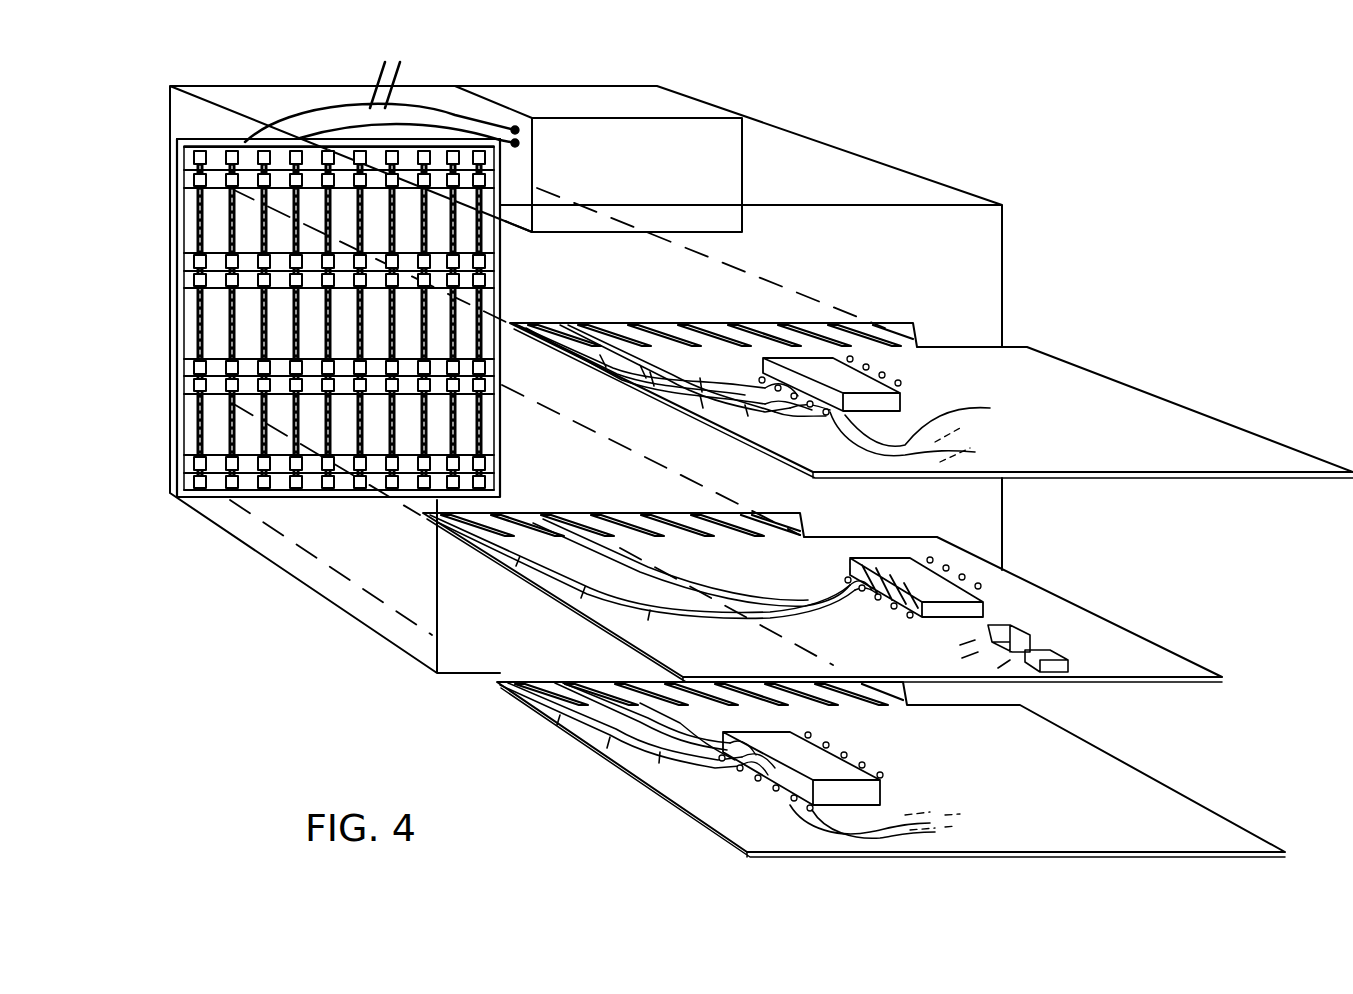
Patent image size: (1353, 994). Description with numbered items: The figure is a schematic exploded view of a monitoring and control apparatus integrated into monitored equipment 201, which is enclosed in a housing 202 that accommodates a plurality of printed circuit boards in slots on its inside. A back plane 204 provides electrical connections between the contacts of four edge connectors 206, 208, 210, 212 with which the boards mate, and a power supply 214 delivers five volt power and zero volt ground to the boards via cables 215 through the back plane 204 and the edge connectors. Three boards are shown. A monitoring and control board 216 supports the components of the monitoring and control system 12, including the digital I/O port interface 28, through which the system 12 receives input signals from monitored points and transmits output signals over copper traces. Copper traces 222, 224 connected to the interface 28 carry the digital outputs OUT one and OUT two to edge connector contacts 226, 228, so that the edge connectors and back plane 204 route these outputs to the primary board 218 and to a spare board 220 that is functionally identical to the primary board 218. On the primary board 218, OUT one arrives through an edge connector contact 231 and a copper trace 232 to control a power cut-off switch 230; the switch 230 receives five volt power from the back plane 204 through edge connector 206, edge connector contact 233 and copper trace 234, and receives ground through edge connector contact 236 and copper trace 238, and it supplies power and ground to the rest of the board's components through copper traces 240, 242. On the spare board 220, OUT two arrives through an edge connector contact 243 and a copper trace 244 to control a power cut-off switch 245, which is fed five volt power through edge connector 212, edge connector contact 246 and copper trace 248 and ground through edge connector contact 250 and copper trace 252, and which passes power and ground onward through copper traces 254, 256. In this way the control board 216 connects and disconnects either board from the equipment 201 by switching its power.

The equipment 201 is at (292, 268).
The cables 215 is at (382, 93).
The housing 202 is at (440, 97).
The back plane 204 is at (180, 140).
The edge connector 206 is at (192, 162).
The edge connector 208 is at (192, 268).
The edge connector 210 is at (192, 372).
The edge connector 212 is at (192, 466).
The power supply 214 is at (683, 112).
The edge connector contact 233 is at (547, 327).
The edge connector contact 236 is at (582, 327).
The edge connector contact 231 is at (622, 326).
The copper trace 234 is at (618, 366).
The copper trace 238 is at (655, 392).
The copper trace 232 is at (700, 410).
The power cut-off switch 230 is at (862, 386).
The copper trace 240 is at (988, 409).
The copper trace 242 is at (975, 453).
The primary board 218 is at (931, 369).
The edge connector contact 226 is at (523, 513).
The edge connector contact 228 is at (553, 513).
The copper trace 224 is at (816, 609).
The copper trace 222 is at (876, 626).
The digital I/O port interface 28 is at (960, 588).
The monitoring and control system 12 is at (1053, 624).
The monitoring and control board 216 is at (822, 565).
The edge connector contact 246 is at (478, 666).
The edge connector contact 250 is at (513, 684).
The edge connector contact 243 is at (612, 685).
The copper trace 248 is at (565, 730).
The copper trace 252 is at (605, 752).
The copper trace 244 is at (640, 771).
The power cut-off switch 245 is at (845, 767).
The spare board 220 is at (865, 759).
The copper trace 256 is at (838, 834).
The copper trace 254 is at (887, 823).